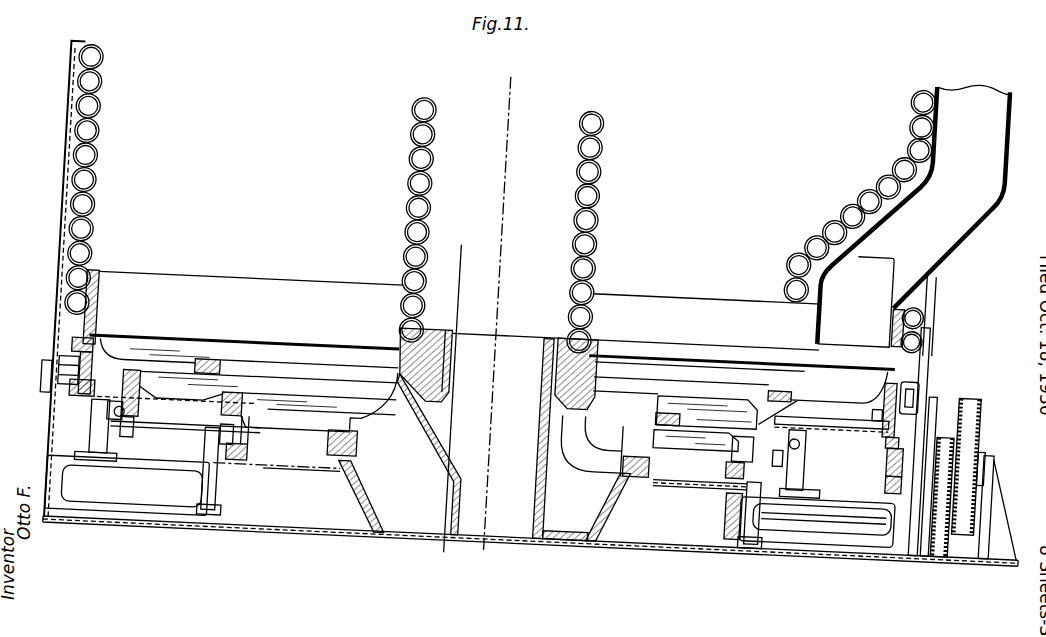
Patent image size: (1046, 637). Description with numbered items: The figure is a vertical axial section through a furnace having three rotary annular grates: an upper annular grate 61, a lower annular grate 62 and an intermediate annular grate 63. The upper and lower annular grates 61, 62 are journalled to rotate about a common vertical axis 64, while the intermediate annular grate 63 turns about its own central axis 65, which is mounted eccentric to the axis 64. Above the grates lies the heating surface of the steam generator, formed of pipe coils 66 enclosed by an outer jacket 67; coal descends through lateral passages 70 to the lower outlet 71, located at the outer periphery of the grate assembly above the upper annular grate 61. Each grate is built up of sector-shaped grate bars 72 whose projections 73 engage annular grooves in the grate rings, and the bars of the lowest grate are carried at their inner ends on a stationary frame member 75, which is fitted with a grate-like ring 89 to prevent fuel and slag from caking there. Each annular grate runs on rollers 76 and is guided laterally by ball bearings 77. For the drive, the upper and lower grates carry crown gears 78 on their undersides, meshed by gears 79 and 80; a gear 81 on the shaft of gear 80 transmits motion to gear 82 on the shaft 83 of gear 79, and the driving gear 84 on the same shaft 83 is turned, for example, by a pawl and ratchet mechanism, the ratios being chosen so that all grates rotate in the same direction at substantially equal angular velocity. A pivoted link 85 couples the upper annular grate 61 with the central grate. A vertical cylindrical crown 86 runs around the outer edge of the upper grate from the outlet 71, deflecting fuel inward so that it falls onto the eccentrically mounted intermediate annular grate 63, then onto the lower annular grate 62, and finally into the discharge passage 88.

The upper annular grate 61 is at (66, 394).
The lower annular grate 62 is at (246, 434).
The intermediate annular grate 63 is at (139, 377).
The common vertical axis 64 is at (487, 239).
The central axis of intermediate grate 65 is at (444, 251).
The pipe coils 66 is at (58, 133).
The outer jacket 67 is at (55, 228).
The lateral passages 70 is at (973, 127).
The lower outlet 71 is at (907, 257).
The sector-shaped grate bars 72 is at (256, 402).
The projections 73 is at (62, 339).
The stationary frame member 75 is at (340, 449).
The rollers 76 is at (41, 355).
The ball bearings 77 is at (41, 388).
The crown gears 78 is at (235, 458).
The gear 79 is at (868, 540).
The gear 80 is at (728, 511).
The gear 81 is at (932, 516).
The gear 82 is at (973, 403).
The shaft 83 is at (876, 472).
The driving gear 84 is at (980, 471).
The pivoted link 85 is at (810, 370).
The cylindrical crown 86 is at (87, 284).
The discharge passage 88 is at (423, 495).
The grate-like ring 89 is at (592, 442).